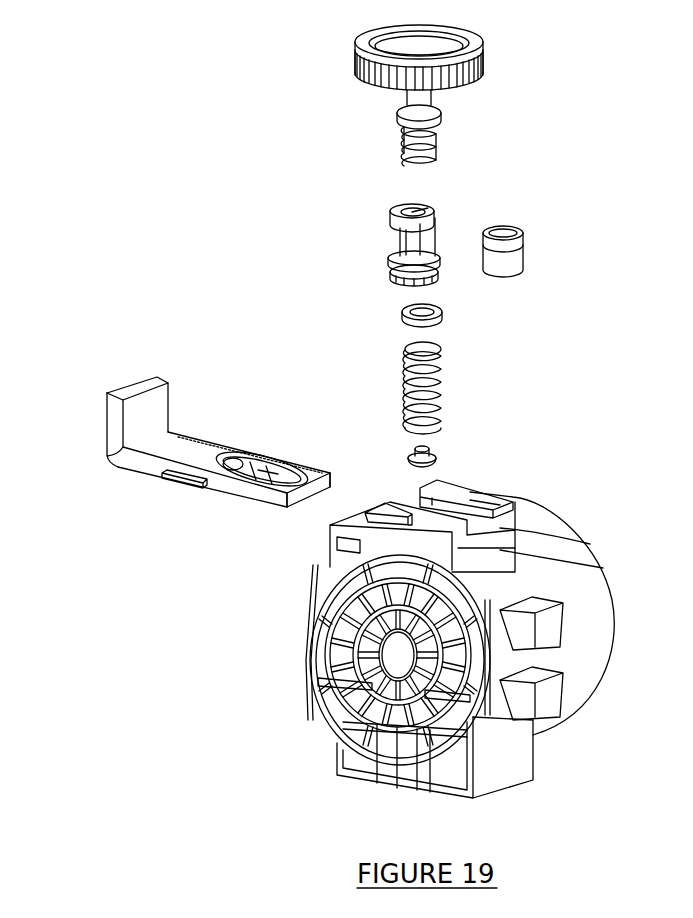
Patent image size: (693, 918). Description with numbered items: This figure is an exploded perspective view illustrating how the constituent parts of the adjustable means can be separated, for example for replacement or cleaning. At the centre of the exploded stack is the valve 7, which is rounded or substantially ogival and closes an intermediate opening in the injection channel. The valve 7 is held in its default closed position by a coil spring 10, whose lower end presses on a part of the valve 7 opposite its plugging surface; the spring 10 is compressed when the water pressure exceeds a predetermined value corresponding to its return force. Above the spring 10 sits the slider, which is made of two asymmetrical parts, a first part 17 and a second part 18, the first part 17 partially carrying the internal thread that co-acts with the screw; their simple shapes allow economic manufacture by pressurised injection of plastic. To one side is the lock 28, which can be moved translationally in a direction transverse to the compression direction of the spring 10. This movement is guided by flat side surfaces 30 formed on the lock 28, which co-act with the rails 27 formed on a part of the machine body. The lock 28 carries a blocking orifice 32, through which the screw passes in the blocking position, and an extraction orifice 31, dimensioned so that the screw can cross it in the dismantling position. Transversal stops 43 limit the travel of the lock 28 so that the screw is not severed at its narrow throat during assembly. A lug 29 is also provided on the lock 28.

The valve 7 is at (440, 457).
The spring 10 is at (432, 385).
The first part 17 is at (400, 250).
The second part 18 is at (500, 268).
The rails 27 is at (605, 568).
The lock 28 is at (222, 442).
The lug 29 is at (142, 417).
The flat side surfaces 30 is at (337, 478).
The extraction orifice 31 is at (280, 472).
The blocking orifice 32 is at (233, 462).
The transversal stops 43 is at (130, 477).